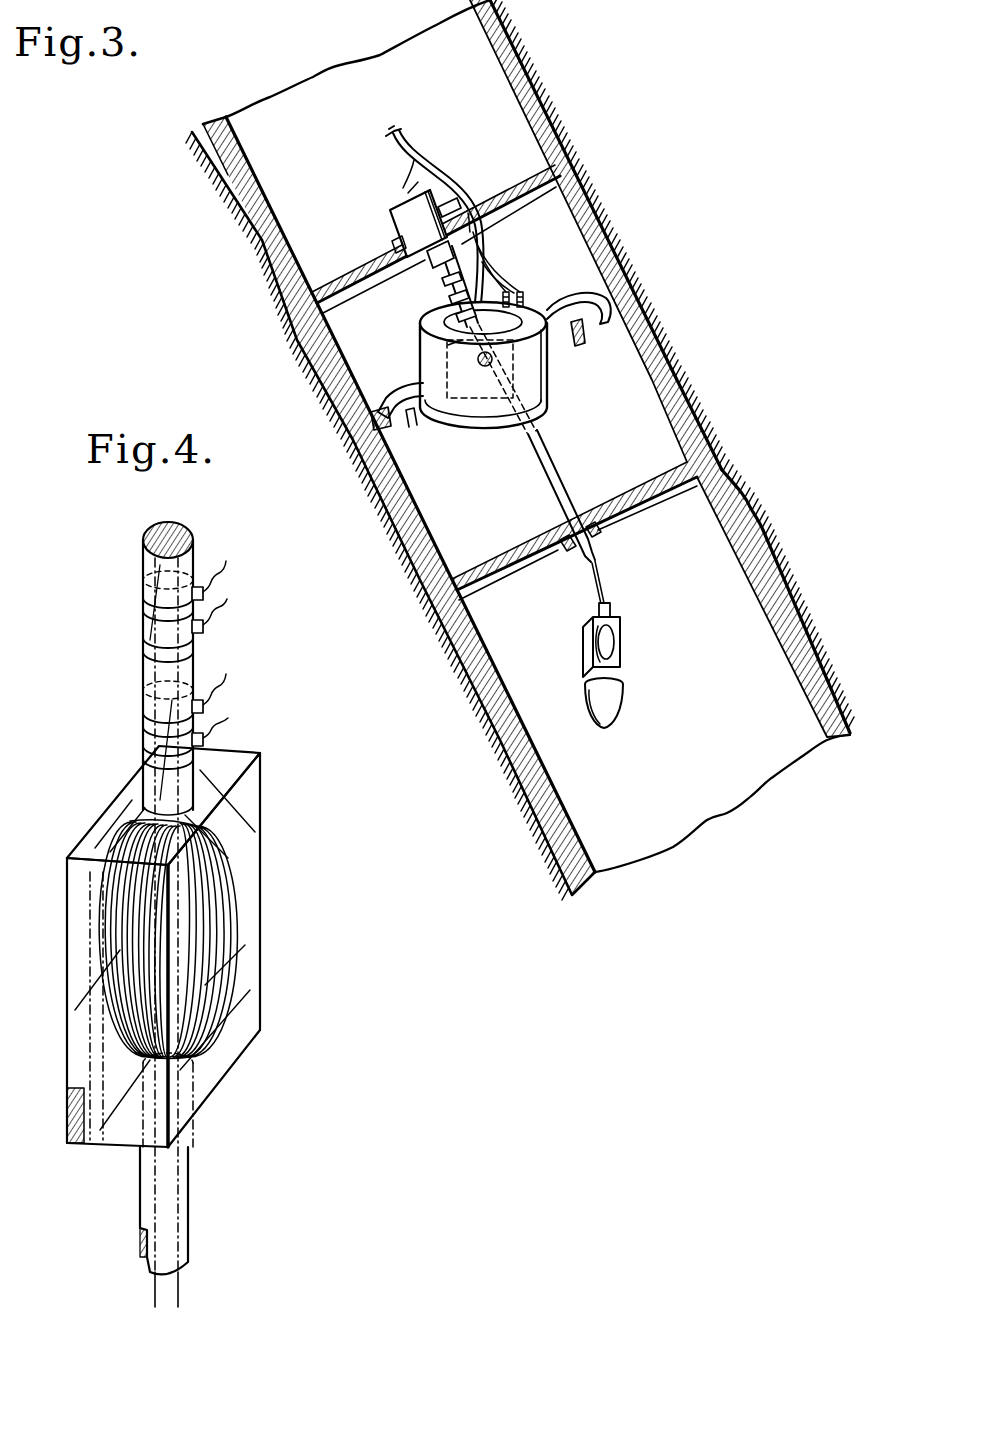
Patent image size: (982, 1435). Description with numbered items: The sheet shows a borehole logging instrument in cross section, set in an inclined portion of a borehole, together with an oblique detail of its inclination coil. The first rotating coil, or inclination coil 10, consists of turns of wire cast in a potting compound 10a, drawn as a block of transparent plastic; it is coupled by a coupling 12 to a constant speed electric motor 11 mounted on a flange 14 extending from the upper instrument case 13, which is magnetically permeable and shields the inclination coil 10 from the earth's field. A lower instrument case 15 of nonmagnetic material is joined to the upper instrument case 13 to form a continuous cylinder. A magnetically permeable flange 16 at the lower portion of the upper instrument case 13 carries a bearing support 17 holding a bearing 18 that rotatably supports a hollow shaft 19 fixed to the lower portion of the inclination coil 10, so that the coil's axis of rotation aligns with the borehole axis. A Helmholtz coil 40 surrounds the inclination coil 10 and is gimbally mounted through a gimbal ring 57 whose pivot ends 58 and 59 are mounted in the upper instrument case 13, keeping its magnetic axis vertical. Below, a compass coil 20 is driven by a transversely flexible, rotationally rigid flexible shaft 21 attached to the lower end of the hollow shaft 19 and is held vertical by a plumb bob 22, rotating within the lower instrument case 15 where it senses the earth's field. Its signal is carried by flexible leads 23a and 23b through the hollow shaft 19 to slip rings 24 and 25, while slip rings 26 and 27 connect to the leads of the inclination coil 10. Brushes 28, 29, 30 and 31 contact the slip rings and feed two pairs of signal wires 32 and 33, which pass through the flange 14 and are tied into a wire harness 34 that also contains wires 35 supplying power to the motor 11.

In FIG. 3, the inclination coil 10 is at (496, 472).
In FIG. 4, the inclination coil 10 is at (220, 893).
In FIG. 3, the potting compound 10a is at (425, 415).
In FIG. 4, the potting compound 10a is at (262, 808).
In FIG. 3, the constant speed electric motor 11 is at (397, 217).
In FIG. 3, the coupling 12 is at (436, 213).
In FIG. 3, the upper instrument case 13 is at (583, 163).
In FIG. 3, the flange 14 is at (345, 280).
In FIG. 3, the lower instrument case 15 is at (785, 548).
In FIG. 3, the flange 16 is at (673, 497).
In FIG. 3, the bearing support 17 is at (587, 513).
In FIG. 3, the bearing 18 is at (562, 530).
In FIG. 3, the hollow shaft 19 is at (553, 458).
In FIG. 4, the hollow shaft 19 is at (142, 552).
In FIG. 3, the compass coil 20 is at (623, 651).
In FIG. 3, the flexible shaft 21 is at (602, 568).
In FIG. 3, the plumb bob 22 is at (622, 693).
In FIG. 3, the flexible lead 23a is at (587, 572).
In FIG. 4, the flexible lead 23a is at (178, 1293).
In FIG. 3, the flexible lead 23b is at (586, 583).
In FIG. 4, the flexible lead 23b is at (155, 1288).
In FIG. 3, the slip ring 24 is at (433, 267).
In FIG. 4, the slip ring 24 is at (143, 600).
In FIG. 3, the slip ring 25 is at (444, 284).
In FIG. 4, the slip ring 25 is at (143, 640).
In FIG. 3, the slip ring 26 is at (451, 301).
In FIG. 4, the slip ring 26 is at (143, 715).
In FIG. 3, the slip ring 27 is at (430, 340).
In FIG. 4, the slip ring 27 is at (143, 752).
In FIG. 3, the brush 28 is at (478, 253).
In FIG. 4, the brush 28 is at (203, 590).
In FIG. 3, the brush 29 is at (486, 268).
In FIG. 4, the brush 29 is at (203, 628).
In FIG. 3, the brush 30 is at (510, 283).
In FIG. 4, the brush 30 is at (203, 703).
In FIG. 3, the brush 31 is at (442, 356).
In FIG. 4, the brush 31 is at (236, 722).
In FIG. 3, the signal wires 32 is at (470, 213).
In FIG. 4, the signal wires 32 is at (225, 577).
In FIG. 3, the signal wires 33 is at (509, 312).
In FIG. 4, the signal wires 33 is at (226, 690).
In FIG. 3, the wire harness 34 is at (403, 147).
In FIG. 3, the wires 35 is at (410, 187).
In FIG. 3, the Helmholtz coil 40 is at (547, 379).
In FIG. 3, the gimbal ring 57 is at (596, 330).
In FIG. 3, the pivot end 58 is at (597, 296).
In FIG. 3, the pivot end 59 is at (390, 394).